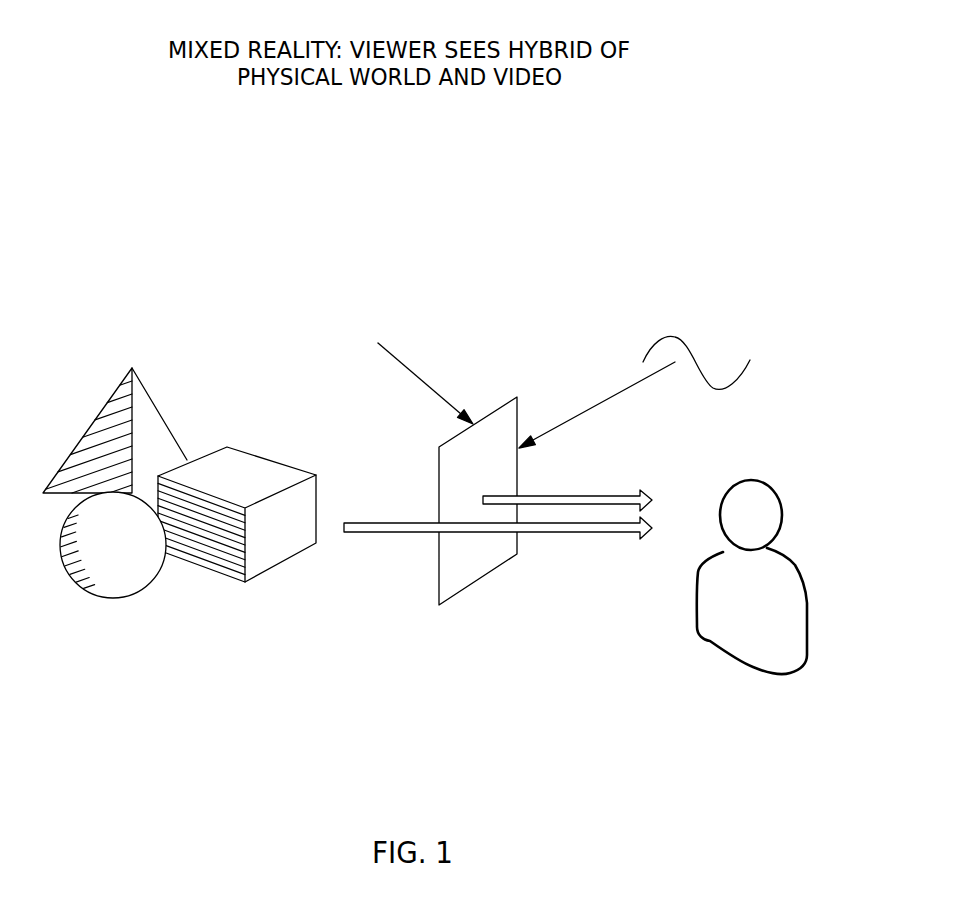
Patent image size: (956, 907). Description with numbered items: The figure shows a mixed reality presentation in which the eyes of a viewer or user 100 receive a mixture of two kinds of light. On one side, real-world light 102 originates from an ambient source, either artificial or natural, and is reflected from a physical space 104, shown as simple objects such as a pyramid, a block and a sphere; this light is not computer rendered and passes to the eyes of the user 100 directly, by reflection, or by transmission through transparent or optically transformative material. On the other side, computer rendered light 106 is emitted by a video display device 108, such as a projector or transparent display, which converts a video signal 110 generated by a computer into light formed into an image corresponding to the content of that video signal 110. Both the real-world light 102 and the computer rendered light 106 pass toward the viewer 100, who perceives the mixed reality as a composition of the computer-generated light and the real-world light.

The viewer or user 100 is at (778, 728).
The real-world light 102 is at (387, 532).
The physical space 104 is at (150, 677).
The computer rendered light 106 is at (580, 506).
The video display device 108 is at (517, 397).
The video signal 110 is at (738, 378).